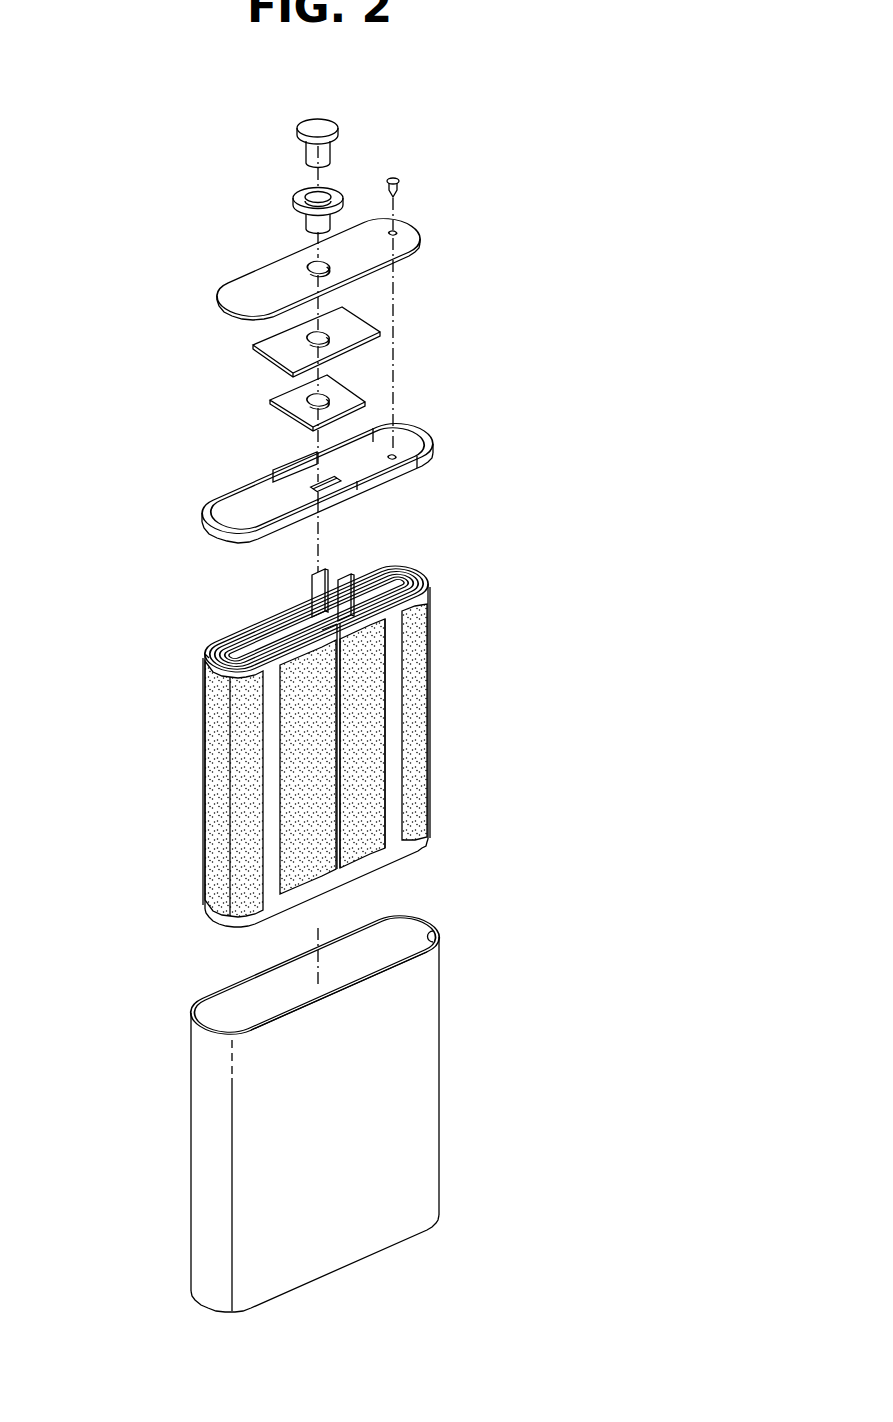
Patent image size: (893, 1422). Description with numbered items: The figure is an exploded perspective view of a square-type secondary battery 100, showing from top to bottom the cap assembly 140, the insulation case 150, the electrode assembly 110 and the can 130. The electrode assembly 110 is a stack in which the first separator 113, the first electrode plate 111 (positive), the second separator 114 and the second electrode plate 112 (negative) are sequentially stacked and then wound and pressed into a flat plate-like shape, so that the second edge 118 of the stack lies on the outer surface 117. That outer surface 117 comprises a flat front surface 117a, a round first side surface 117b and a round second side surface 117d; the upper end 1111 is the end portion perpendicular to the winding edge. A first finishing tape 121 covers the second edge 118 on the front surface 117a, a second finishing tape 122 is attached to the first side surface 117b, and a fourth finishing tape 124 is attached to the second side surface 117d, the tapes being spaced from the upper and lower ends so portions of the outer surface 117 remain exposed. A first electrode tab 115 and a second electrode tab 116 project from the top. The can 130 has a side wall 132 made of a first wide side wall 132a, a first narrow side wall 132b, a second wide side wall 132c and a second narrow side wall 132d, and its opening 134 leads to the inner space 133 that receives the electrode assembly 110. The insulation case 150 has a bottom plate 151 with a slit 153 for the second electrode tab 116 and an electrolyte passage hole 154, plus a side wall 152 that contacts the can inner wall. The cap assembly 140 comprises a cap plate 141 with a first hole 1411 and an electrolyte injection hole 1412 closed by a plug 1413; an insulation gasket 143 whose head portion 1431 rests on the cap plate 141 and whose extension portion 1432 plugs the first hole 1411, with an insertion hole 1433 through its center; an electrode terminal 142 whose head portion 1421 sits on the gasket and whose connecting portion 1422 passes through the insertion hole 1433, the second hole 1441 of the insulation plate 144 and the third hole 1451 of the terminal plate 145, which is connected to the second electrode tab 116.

The secondary battery 100 is at (122, 108).
The electrode assembly 110 is at (158, 772).
The first electrode plate 111 is at (421, 576).
The upper end 1111 is at (209, 645).
The second electrode plate 112 is at (317, 619).
The first separator 113 is at (317, 618).
The second separator 114 is at (433, 580).
The first electrode tab 115 is at (346, 577).
The second electrode tab 116 is at (313, 585).
The outer surface 117 is at (394, 690).
The front surface 117a is at (370, 791).
The first side surface 117b is at (200, 831).
The second side surface 117d is at (432, 612).
The second edge 118 is at (290, 613).
The first finishing tape 121 is at (367, 748).
The second finishing tape 122 is at (208, 734).
The fourth finishing tape 124 is at (418, 658).
The can 130 is at (158, 1148).
The side wall 132 is at (441, 1030).
The first wide side wall 132a is at (421, 1082).
The first narrow side wall 132b is at (197, 1088).
The second wide side wall 132c is at (289, 981).
The second narrow side wall 132d is at (435, 937).
The inner space 133 is at (401, 938).
The opening 134 is at (257, 998).
The cap assembly 140 is at (181, 342).
The cap plate 141 is at (213, 289).
The first hole 1411 is at (318, 269).
The electrolyte injection hole 1412 is at (392, 233).
The plug 1413 is at (400, 178).
The electrode terminal 142 is at (346, 120).
The head portion 1421 is at (312, 123).
The connecting portion 1422 is at (305, 153).
The insulation gasket 143 is at (346, 185).
The head portion 1431 is at (295, 203).
The extension portion 1432 is at (305, 228).
The insertion hole 1433 is at (306, 196).
The insulation plate 144 is at (250, 361).
The second hole 1441 is at (334, 338).
The terminal plate 145 is at (263, 402).
The third hole 1451 is at (334, 398).
The insulation case 150 is at (193, 499).
The bottom plate 151 is at (397, 454).
The side wall 152 is at (434, 452).
The slit 153 is at (311, 486).
The electrolyte passage hole 154 is at (401, 453).